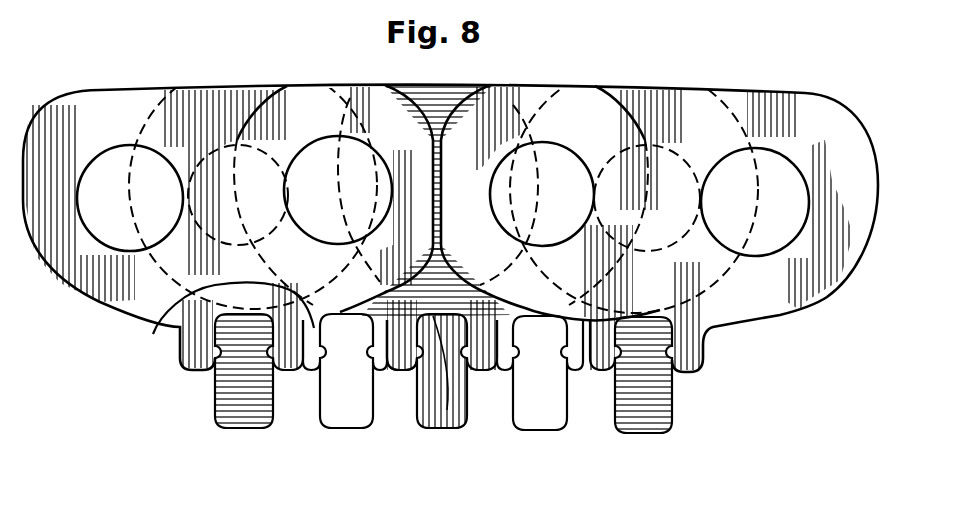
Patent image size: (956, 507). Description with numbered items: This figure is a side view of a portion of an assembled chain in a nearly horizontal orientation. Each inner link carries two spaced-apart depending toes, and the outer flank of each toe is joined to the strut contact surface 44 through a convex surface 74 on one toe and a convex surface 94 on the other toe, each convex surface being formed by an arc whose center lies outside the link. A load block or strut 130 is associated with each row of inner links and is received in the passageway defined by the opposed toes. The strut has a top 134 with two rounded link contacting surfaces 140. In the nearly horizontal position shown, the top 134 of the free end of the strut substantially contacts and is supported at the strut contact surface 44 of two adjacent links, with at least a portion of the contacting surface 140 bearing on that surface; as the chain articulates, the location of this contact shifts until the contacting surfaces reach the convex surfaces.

The convex surface 74 is at (154, 331).
The strut 130 is at (230, 413).
The convex surface 94 is at (403, 372).
The rounded link contacting surface 140 is at (442, 318).
The strut contact surface 44 is at (574, 372).
The top of strut 134 is at (633, 327).